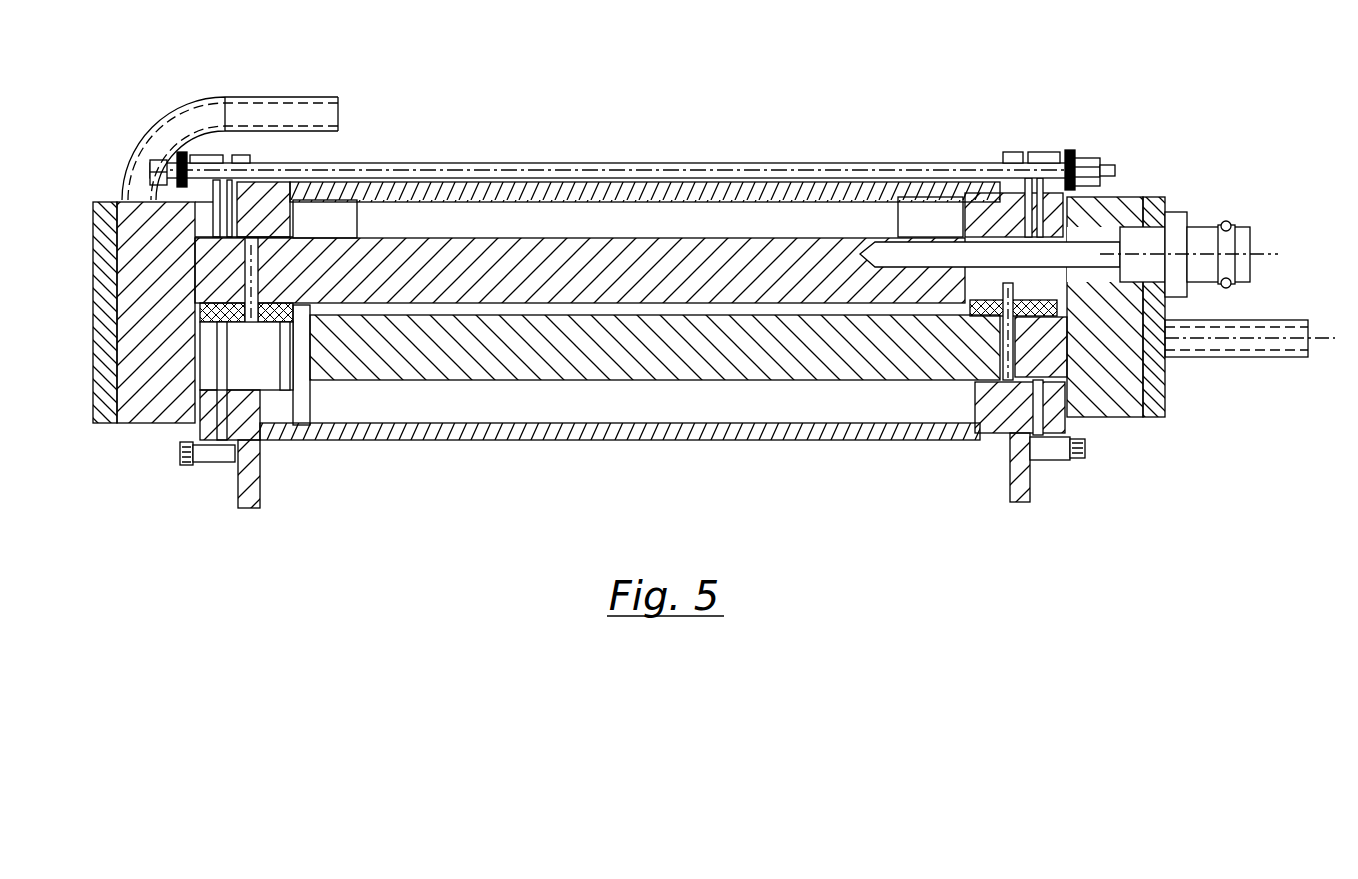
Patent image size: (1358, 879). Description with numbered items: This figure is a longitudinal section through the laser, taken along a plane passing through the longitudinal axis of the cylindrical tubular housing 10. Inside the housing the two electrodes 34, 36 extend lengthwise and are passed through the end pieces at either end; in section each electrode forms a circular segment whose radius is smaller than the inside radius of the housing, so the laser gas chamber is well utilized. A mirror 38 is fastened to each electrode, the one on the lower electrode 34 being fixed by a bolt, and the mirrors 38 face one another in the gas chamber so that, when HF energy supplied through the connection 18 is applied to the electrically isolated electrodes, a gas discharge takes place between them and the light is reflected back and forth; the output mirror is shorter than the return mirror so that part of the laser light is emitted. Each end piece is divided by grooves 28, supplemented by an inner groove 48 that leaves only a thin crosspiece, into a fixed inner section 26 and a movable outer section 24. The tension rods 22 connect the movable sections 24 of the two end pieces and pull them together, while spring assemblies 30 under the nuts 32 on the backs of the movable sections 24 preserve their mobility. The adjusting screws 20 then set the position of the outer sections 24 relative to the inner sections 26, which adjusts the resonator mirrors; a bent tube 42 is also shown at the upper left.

The tubular housing 10 is at (570, 441).
The connection 18 is at (1247, 245).
The adjusting screws 20 is at (1050, 470).
The tension rods 22 is at (752, 175).
The movable sections 24 is at (1075, 425).
The fixed sections 26 is at (978, 445).
The grooves 28 is at (208, 468).
The spring assemblies 30 is at (1070, 150).
The nuts 32 is at (1092, 157).
The lower electrode 34 is at (488, 365).
The electrode 36 is at (570, 250).
The mirror 38 is at (292, 445).
The fluid tube 42 is at (262, 112).
The groove 48 is at (185, 425).